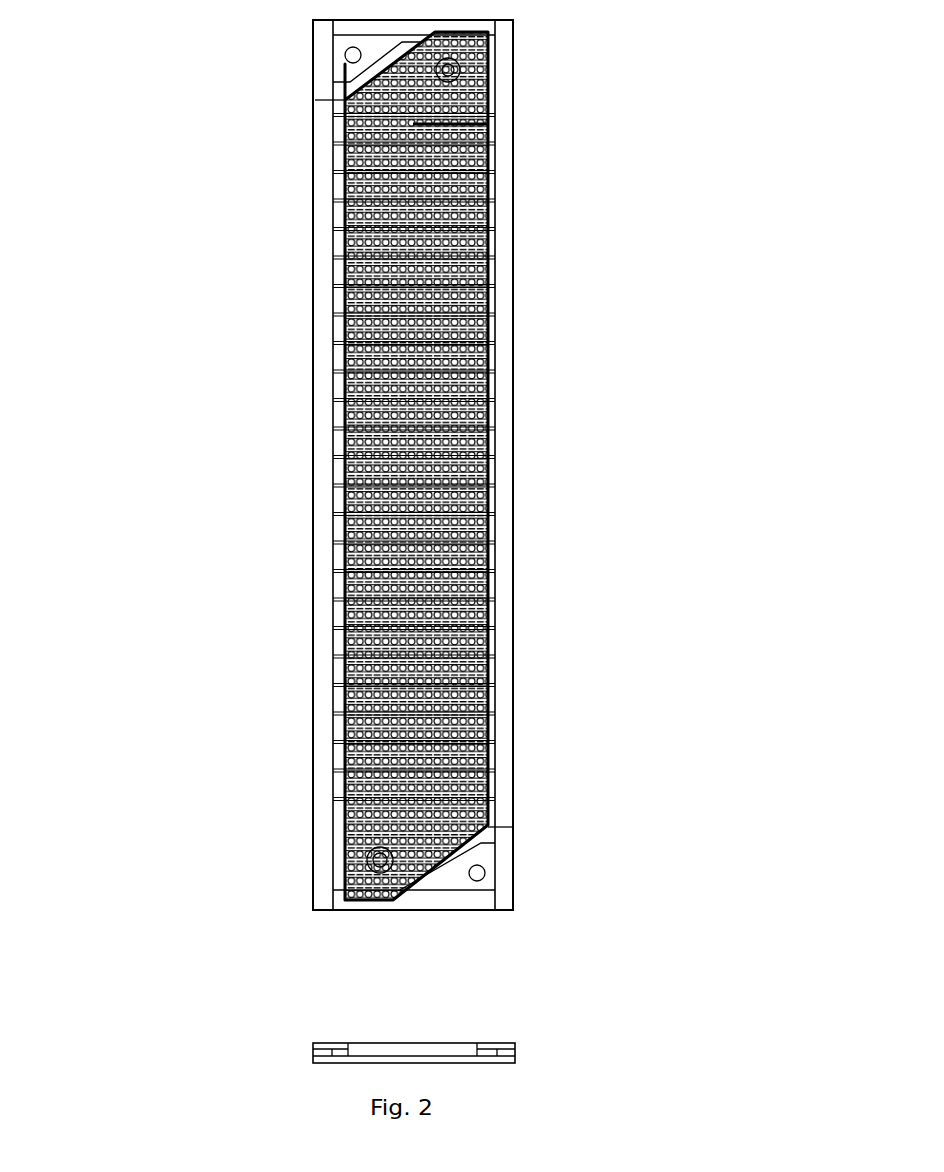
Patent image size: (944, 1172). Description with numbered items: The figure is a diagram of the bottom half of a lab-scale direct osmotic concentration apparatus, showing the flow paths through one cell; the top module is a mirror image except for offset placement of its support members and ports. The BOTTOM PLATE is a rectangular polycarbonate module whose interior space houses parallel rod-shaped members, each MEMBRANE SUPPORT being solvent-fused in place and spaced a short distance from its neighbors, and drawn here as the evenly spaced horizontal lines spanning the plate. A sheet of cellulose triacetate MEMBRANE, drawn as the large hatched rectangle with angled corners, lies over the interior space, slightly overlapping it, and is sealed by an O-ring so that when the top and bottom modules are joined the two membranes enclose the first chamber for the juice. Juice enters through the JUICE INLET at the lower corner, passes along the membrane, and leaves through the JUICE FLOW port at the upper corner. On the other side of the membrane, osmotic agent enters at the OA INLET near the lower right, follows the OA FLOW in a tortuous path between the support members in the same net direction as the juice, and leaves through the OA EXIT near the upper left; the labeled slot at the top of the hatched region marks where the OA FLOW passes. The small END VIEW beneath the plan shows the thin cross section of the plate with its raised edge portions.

The bottom plate BOTTOM PLATE is at (272, 465).
The membrane support MEMBRANE SUPPORT is at (489, 466).
The membrane MEMBRANE is at (380, 446).
The OA flow OA FLOW is at (489, 127).
The OA exit OA EXIT is at (345, 67).
The juice flow JUICE FLOW is at (459, 73).
The juice inlet JUICE INLET is at (373, 862).
The OA inlet OA INLET is at (485, 876).
The end view END VIEW is at (290, 1056).